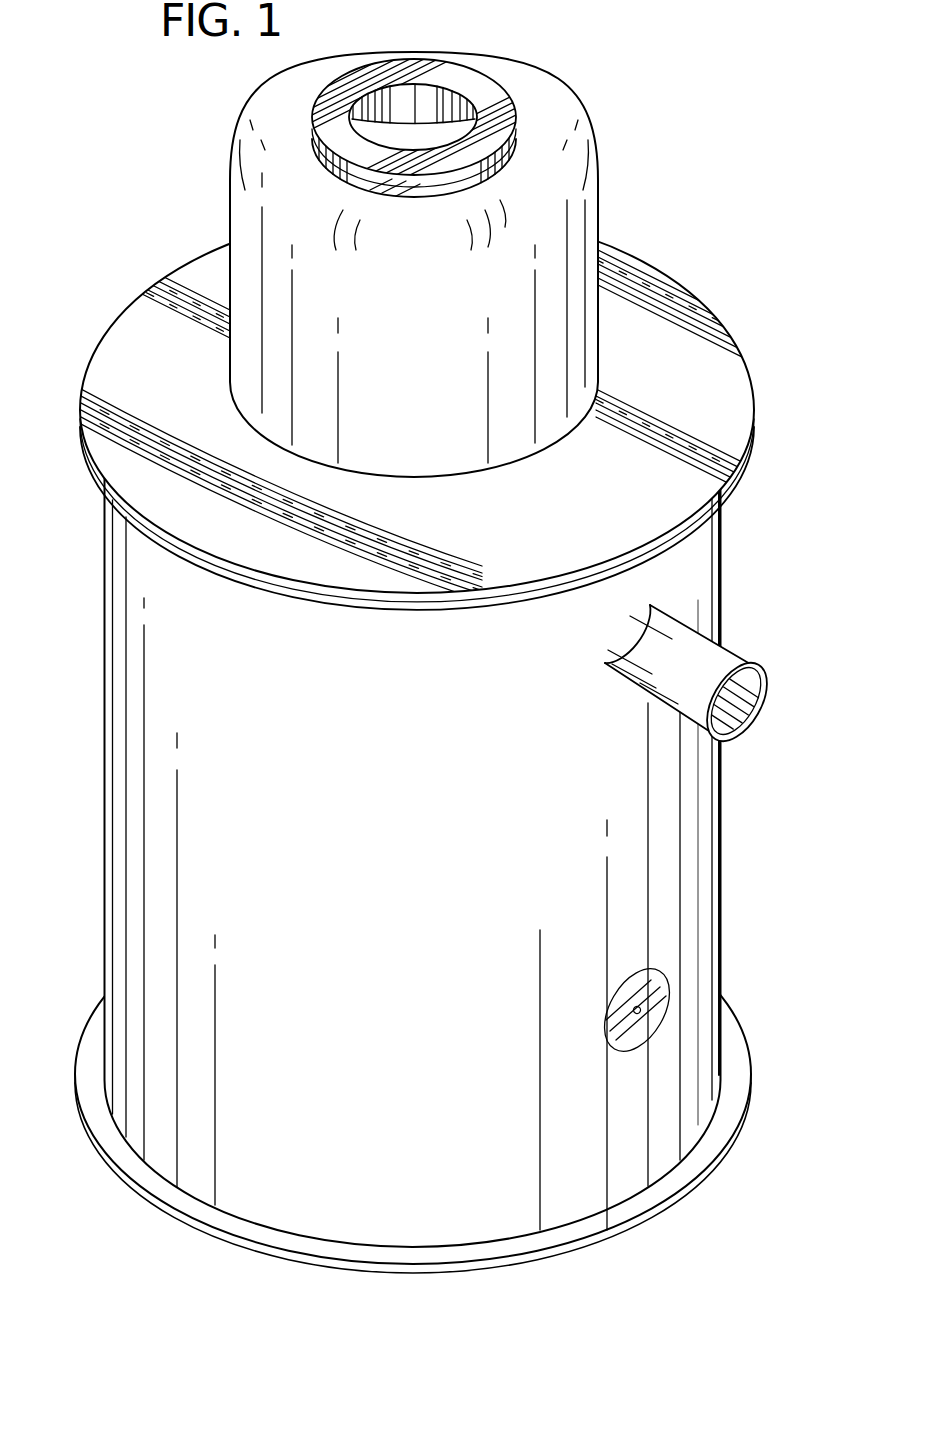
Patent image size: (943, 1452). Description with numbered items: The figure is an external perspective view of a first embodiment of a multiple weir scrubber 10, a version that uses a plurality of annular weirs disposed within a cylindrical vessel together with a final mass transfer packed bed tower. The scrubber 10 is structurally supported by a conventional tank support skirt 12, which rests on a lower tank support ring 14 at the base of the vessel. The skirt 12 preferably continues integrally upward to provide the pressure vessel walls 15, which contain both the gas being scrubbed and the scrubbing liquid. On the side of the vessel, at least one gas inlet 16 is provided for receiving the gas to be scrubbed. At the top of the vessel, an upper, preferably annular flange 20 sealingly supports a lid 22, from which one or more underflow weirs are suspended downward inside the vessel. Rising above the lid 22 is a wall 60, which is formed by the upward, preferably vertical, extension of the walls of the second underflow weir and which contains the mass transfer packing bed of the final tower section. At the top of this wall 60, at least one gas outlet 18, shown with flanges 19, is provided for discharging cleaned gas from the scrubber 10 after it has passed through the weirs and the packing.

The multiple weir scrubber 10 is at (700, 214).
The tank support skirt 12 is at (287, 1208).
The lower tank support ring 14 is at (717, 1108).
The pressure vessel walls 15 is at (717, 817).
The gas inlet 16 is at (733, 652).
The gas outlet 18 is at (428, 97).
The flanges 19 is at (495, 91).
The upper annular flange 20 is at (155, 525).
The lid 22 is at (132, 503).
The wall 60 is at (229, 266).